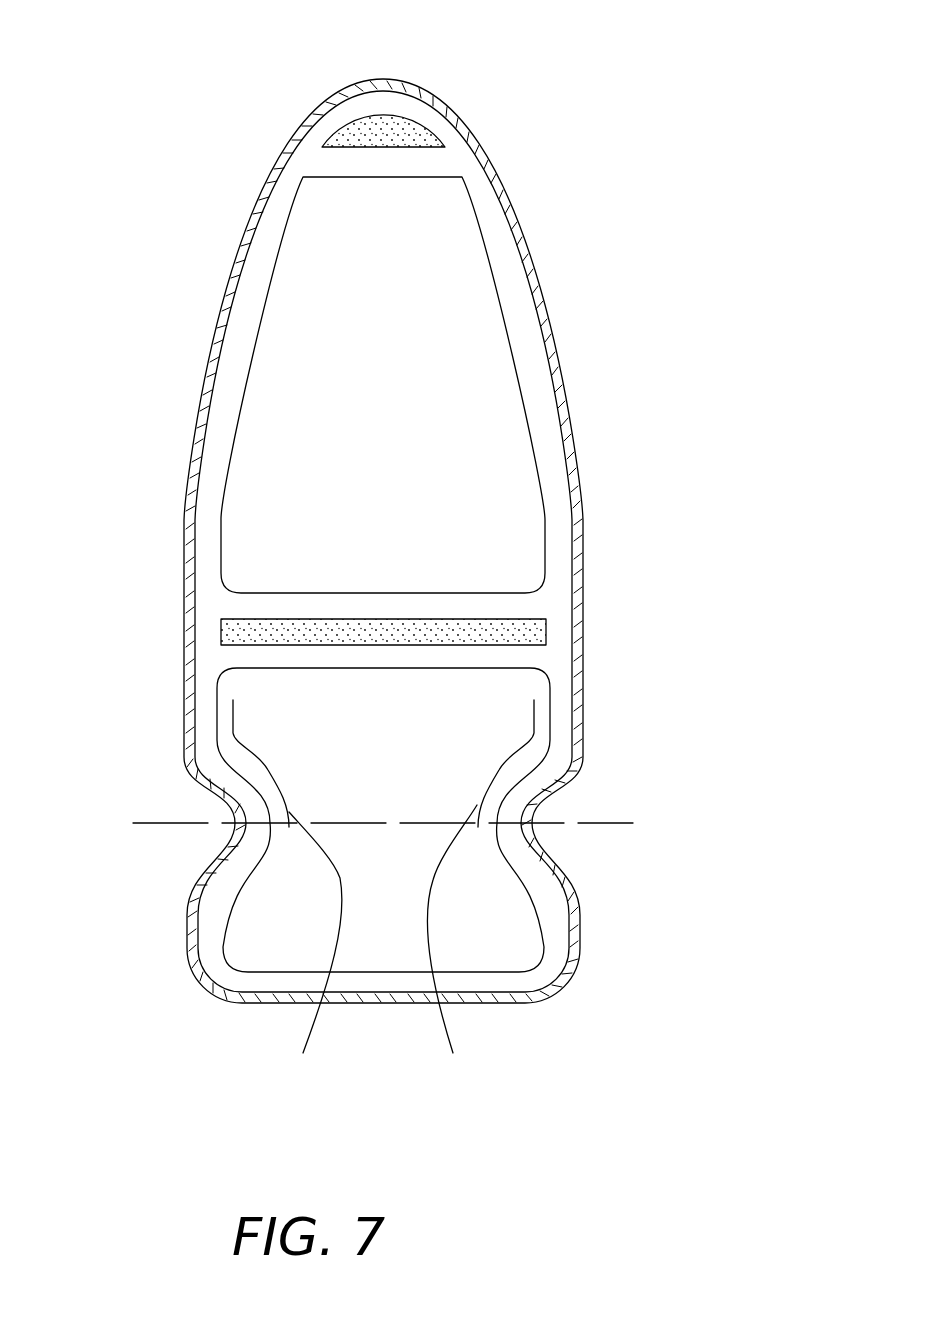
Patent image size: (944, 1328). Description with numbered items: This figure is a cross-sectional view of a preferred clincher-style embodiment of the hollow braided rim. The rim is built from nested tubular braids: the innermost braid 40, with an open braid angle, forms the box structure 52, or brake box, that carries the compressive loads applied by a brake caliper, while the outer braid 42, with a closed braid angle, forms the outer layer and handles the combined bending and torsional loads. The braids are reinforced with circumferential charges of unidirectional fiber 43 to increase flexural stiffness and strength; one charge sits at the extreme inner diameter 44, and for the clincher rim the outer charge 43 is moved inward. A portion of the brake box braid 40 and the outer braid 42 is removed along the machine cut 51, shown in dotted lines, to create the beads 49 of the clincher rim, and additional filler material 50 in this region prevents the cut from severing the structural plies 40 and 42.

The innermost braid 40 is at (547, 748).
The outer braid 42 is at (570, 685).
The circumferential charge of unidirectional fiber 43 is at (397, 140).
The extreme inner diameter 44 is at (385, 113).
The bead 49 is at (517, 773).
The filler material 50 is at (377, 955).
The machine cut 51 is at (607, 823).
The box structure 52 is at (291, 720).